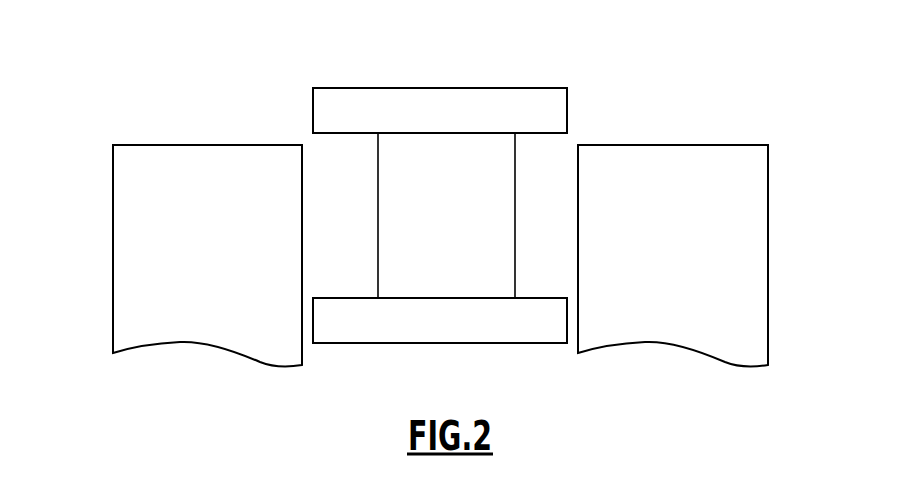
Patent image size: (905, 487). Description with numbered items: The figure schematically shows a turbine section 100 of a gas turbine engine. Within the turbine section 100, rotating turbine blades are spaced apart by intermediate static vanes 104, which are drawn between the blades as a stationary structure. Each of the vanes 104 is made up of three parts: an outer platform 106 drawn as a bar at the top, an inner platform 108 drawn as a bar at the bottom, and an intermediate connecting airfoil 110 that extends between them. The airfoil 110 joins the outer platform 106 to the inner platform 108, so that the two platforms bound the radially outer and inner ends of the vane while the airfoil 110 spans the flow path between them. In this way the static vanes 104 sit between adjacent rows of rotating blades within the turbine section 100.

The turbine section 100 is at (165, 92).
The static vanes 104 is at (596, 69).
The outer platform 106 is at (411, 110).
The inner platform 108 is at (485, 331).
The airfoil 110 is at (422, 235).